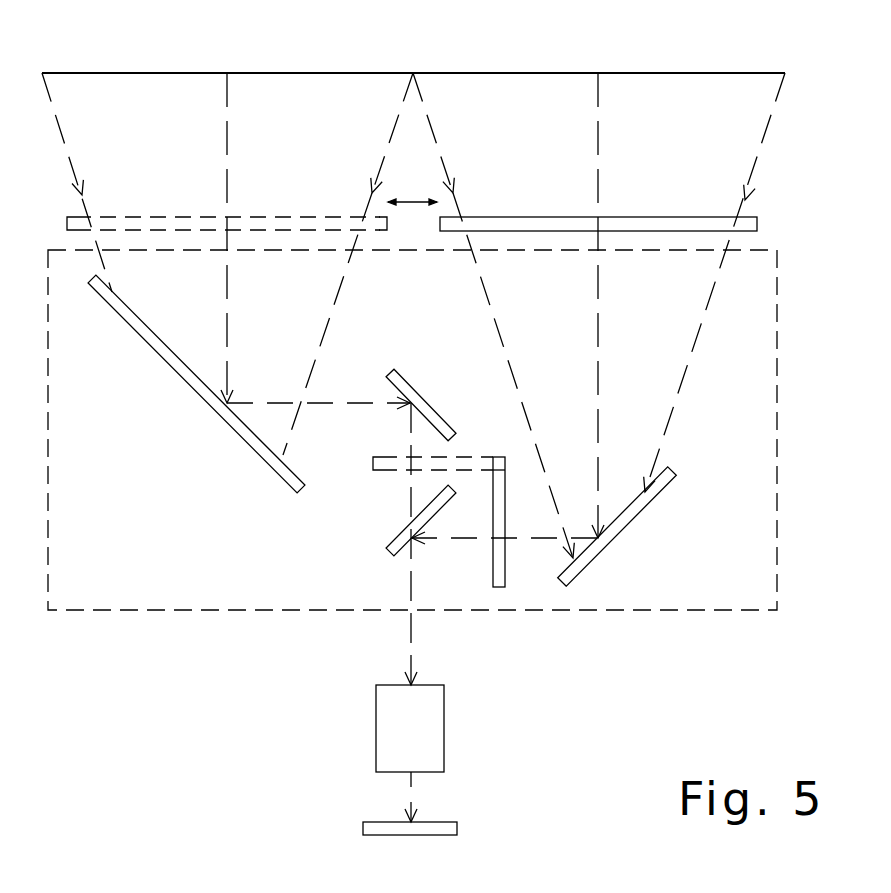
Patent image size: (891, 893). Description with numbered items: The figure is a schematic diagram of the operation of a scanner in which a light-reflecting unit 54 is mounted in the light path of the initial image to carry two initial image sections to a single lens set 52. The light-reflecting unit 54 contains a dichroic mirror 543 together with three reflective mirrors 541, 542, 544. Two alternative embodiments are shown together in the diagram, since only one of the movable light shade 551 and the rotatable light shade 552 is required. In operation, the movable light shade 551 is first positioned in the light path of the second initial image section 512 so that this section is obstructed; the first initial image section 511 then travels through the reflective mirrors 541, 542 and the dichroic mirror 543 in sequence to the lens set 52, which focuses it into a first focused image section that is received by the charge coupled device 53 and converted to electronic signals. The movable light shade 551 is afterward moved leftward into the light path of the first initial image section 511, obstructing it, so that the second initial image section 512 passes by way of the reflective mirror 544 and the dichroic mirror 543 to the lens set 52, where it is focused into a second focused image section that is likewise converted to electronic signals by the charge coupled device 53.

The first initial image section 511 is at (193, 73).
The second initial image section 512 is at (565, 73).
The movable light shade 551 is at (757, 222).
The rotatable light shade 552 is at (493, 573).
The light-reflecting unit 54 is at (767, 387).
The reflective mirror 541 is at (175, 362).
The reflective mirror 542 is at (408, 387).
The dichroic mirror 543 is at (388, 548).
The reflective mirror 544 is at (650, 498).
The lens set 52 is at (388, 722).
The charge coupled device 53 is at (433, 827).